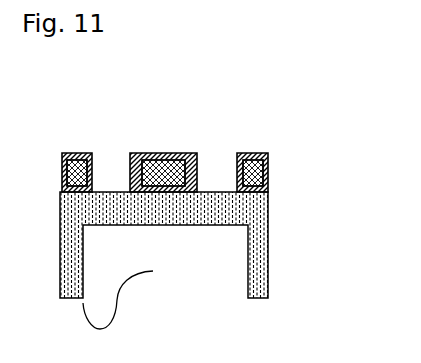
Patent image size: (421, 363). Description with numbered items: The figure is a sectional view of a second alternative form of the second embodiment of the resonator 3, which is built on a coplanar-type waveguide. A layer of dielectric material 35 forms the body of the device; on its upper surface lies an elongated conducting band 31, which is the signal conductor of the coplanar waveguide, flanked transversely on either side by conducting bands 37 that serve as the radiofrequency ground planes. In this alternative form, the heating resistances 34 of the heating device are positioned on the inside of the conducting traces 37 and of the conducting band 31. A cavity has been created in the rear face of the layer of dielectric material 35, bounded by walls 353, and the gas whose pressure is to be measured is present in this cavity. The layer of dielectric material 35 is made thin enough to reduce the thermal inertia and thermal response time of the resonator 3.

The resonator 3 is at (84, 84).
The conducting band 31 is at (167, 152).
The heating resistances 34 is at (92, 171).
The layer of dielectric material 35 is at (271, 212).
The conducting bands 37 is at (75, 152).
The walls 353 is at (135, 296).